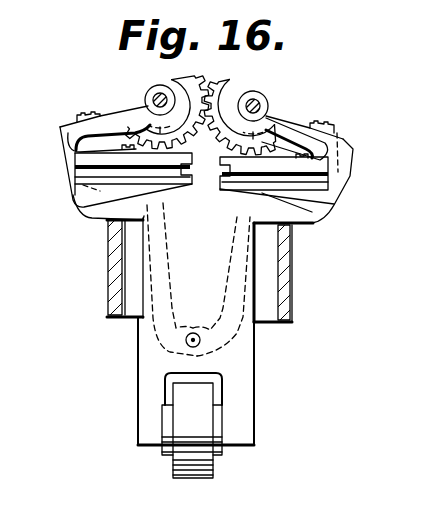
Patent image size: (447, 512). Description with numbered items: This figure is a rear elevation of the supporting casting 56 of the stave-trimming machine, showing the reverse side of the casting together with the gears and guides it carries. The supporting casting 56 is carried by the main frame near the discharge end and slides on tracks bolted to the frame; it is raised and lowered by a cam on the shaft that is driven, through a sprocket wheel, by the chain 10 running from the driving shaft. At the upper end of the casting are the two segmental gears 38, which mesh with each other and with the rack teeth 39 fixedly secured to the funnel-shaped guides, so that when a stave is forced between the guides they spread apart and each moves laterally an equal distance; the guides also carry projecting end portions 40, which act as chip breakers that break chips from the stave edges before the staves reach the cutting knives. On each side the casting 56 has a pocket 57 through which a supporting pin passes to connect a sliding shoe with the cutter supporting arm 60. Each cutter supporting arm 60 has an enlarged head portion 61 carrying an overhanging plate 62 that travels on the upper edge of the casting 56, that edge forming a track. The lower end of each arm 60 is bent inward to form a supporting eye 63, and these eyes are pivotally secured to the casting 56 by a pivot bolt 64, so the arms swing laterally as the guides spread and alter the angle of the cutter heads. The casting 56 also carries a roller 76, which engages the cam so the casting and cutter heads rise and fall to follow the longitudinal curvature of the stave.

The chain 10 is at (288, 272).
The segmental gears 38 is at (182, 88).
The rack teeth 39 is at (129, 147).
The projecting end portions 40 is at (84, 207).
The supporting casting 56 is at (201, 338).
The pocket 57 is at (332, 186).
The cutter supporting arm 60 is at (157, 232).
The enlarged head portion 61 is at (73, 195).
The overhanging plate 62 is at (88, 115).
The supporting eye 63 is at (147, 342).
The pivot bolt 64 is at (247, 350).
The roller 76 is at (200, 427).